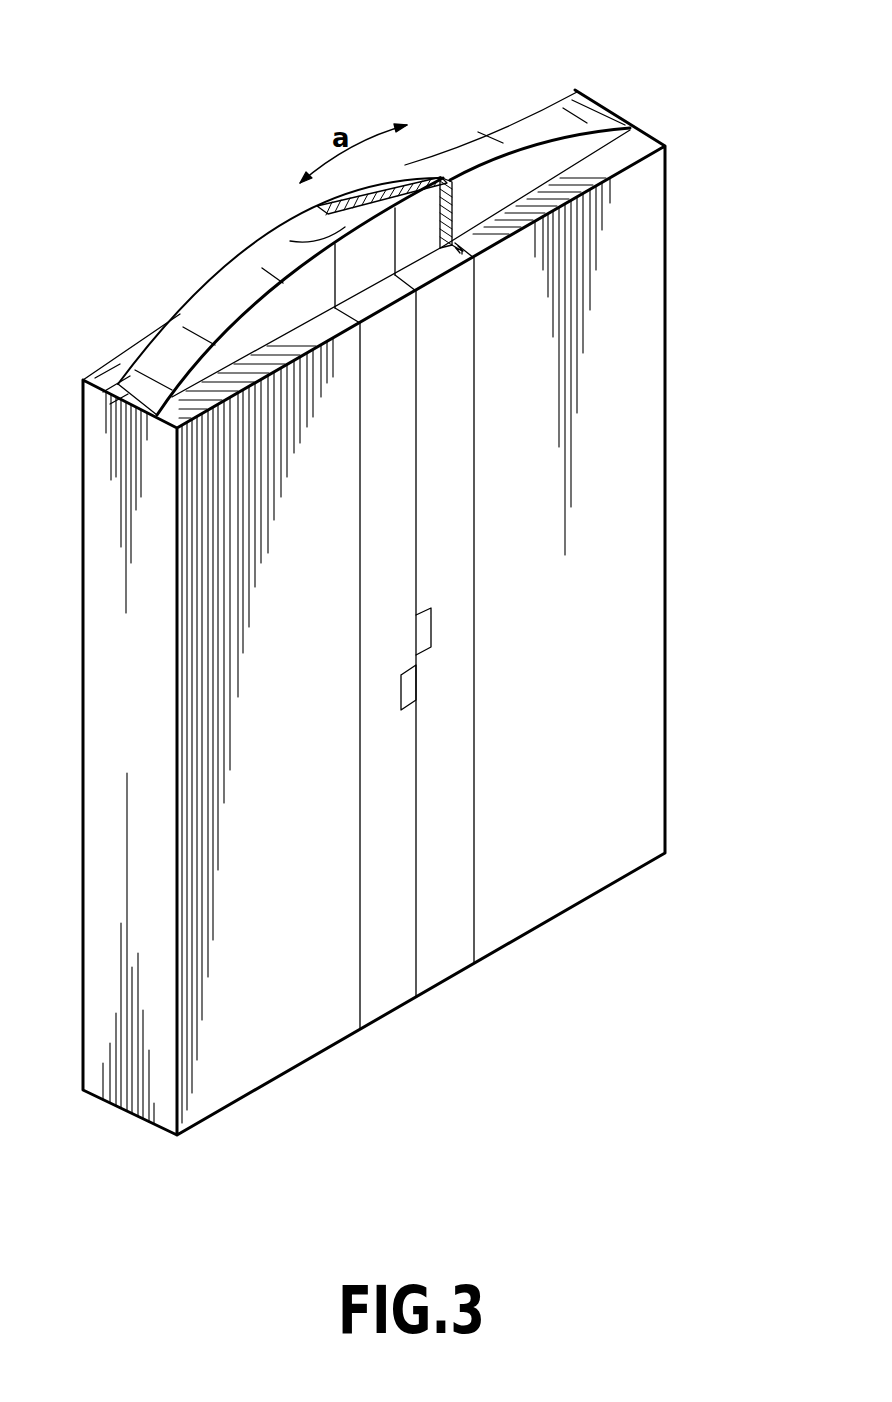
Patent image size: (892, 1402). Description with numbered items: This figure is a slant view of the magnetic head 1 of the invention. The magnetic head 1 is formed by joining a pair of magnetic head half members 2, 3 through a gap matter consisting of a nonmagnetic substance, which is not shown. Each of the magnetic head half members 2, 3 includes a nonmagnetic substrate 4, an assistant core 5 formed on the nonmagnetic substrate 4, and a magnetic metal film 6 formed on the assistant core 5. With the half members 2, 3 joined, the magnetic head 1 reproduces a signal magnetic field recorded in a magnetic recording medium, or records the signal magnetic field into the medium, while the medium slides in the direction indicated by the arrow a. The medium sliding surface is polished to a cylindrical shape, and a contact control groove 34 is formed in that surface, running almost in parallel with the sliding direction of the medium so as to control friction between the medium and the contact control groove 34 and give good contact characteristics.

The magnetic head 1 is at (637, 93).
The magnetic head half member 2 is at (310, 1040).
The magnetic head half member 3 is at (565, 887).
The nonmagnetic substrate 4 is at (207, 317).
The assistant core 5 is at (300, 241).
The magnetic metal film 6 is at (317, 205).
The contact control groove 34 is at (623, 158).